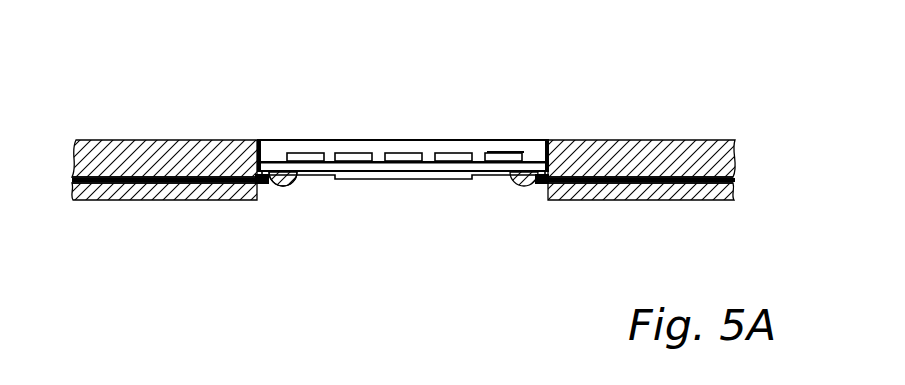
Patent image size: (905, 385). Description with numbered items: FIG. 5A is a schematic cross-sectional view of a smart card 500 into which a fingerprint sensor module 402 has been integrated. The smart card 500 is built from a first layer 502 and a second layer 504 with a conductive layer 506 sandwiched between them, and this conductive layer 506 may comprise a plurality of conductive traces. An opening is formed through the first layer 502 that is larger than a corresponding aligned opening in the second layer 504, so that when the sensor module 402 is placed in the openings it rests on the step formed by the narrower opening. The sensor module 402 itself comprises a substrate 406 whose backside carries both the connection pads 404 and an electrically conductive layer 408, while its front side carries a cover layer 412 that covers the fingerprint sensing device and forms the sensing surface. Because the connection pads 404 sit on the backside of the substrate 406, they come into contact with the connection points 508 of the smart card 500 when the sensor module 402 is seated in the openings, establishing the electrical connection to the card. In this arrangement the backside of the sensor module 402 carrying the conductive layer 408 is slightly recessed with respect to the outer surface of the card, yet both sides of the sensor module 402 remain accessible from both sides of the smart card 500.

The smart card 500 is at (307, 66).
The first layer 502 is at (188, 140).
The second layer 504 is at (213, 200).
The conductive layer 506 is at (146, 179).
The connection points 508 is at (266, 184).
The fingerprint sensor module 402 is at (458, 140).
The connection pads 404 is at (275, 174).
The substrate 406 is at (383, 161).
The electrically conductive layer 408 is at (418, 179).
The cover layer 412 is at (509, 160).